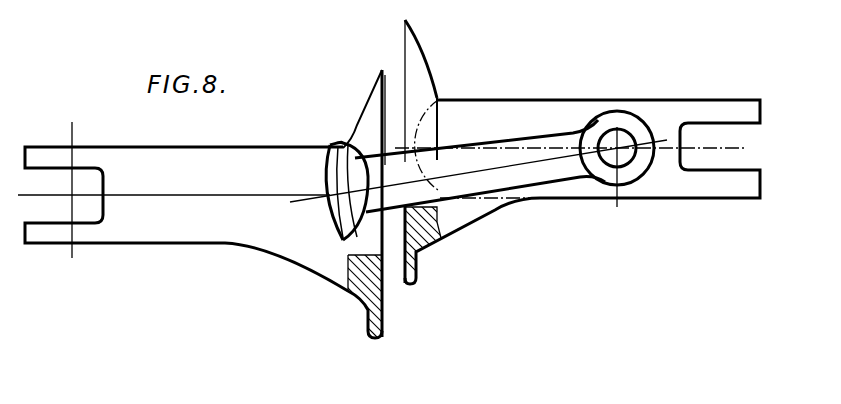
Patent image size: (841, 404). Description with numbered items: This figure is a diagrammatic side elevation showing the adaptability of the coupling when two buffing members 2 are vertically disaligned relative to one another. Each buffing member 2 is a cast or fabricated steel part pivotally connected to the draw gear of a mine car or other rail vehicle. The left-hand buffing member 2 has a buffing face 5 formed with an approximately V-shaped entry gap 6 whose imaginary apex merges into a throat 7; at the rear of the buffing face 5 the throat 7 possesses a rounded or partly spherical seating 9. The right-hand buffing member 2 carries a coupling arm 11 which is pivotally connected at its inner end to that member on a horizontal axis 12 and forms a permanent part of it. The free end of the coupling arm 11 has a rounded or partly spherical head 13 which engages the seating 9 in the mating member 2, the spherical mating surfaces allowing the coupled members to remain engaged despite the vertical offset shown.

The buffing member 2 is at (192, 163).
The buffing face 5 is at (389, 53).
The V-shaped entry gap 6 is at (372, 97).
The throat 7 is at (367, 247).
The seating 9 is at (438, 100).
The coupling arm 11 is at (503, 155).
The horizontal axis 12 is at (617, 169).
The head 13 is at (343, 155).